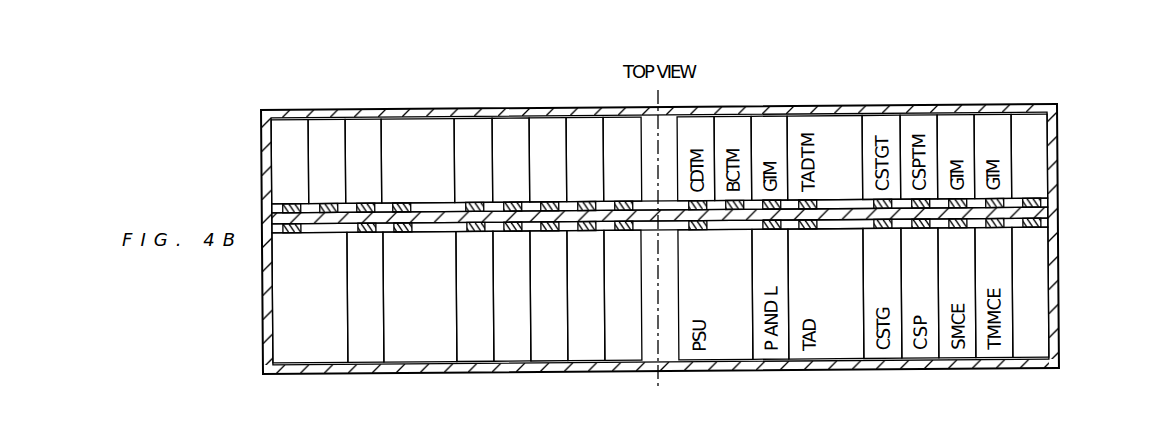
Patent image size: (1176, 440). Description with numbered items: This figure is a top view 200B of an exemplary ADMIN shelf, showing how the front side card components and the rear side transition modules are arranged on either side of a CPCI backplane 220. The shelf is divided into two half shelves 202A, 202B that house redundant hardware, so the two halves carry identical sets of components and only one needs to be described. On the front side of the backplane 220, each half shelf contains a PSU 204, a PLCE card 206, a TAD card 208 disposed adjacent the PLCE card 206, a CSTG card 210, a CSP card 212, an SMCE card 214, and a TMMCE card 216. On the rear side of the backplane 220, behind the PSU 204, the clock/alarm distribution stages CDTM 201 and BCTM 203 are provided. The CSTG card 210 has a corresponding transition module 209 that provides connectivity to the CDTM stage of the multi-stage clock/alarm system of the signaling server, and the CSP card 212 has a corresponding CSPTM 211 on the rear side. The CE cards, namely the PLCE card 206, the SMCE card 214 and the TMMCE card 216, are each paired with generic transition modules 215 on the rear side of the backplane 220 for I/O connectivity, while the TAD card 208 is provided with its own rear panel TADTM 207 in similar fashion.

The top view of the ADMIN shelf 200B is at (1100, 106).
The CDTM 201 is at (293, 125).
The BCTM 203 is at (327, 125).
The generic transition modules (GTMs) 215 is at (363, 125).
The TADTM 207 is at (408, 125).
The TM for CSTG card 209 is at (472, 125).
The CSPTM 211 is at (519, 125).
The PSU 204 is at (313, 358).
The PLCE card 206 is at (364, 358).
The TAD card 208 is at (425, 358).
The CSTG card 210 is at (465, 358).
The CSP card 212 is at (513, 358).
The SMCE card 214 is at (550, 358).
The TMMCE card 216 is at (597, 358).
The CPCI backplane 220 is at (1056, 214).
The half shelf 202A is at (267, 326).
The half shelf 202B is at (1052, 320).